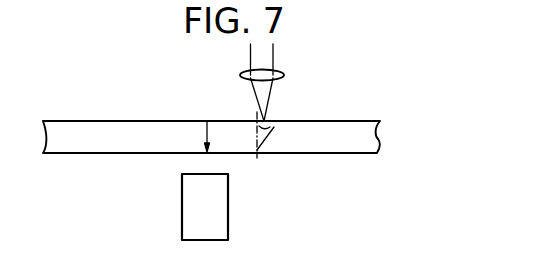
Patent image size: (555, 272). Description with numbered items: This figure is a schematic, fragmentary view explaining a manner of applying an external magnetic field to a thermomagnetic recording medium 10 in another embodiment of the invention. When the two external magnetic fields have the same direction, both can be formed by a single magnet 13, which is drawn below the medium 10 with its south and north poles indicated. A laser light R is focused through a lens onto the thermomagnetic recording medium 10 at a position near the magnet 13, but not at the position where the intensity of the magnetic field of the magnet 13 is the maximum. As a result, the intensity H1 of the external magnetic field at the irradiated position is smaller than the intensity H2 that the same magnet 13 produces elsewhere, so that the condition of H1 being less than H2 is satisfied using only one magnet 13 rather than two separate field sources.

The thermomagnetic recording medium 10 is at (78, 118).
The magnet 13 is at (222, 211).
The laser light R is at (265, 58).
The external magnetic field intensity at the irradiated position H1 is at (278, 137).
The external magnetic field intensity H2 is at (202, 125).